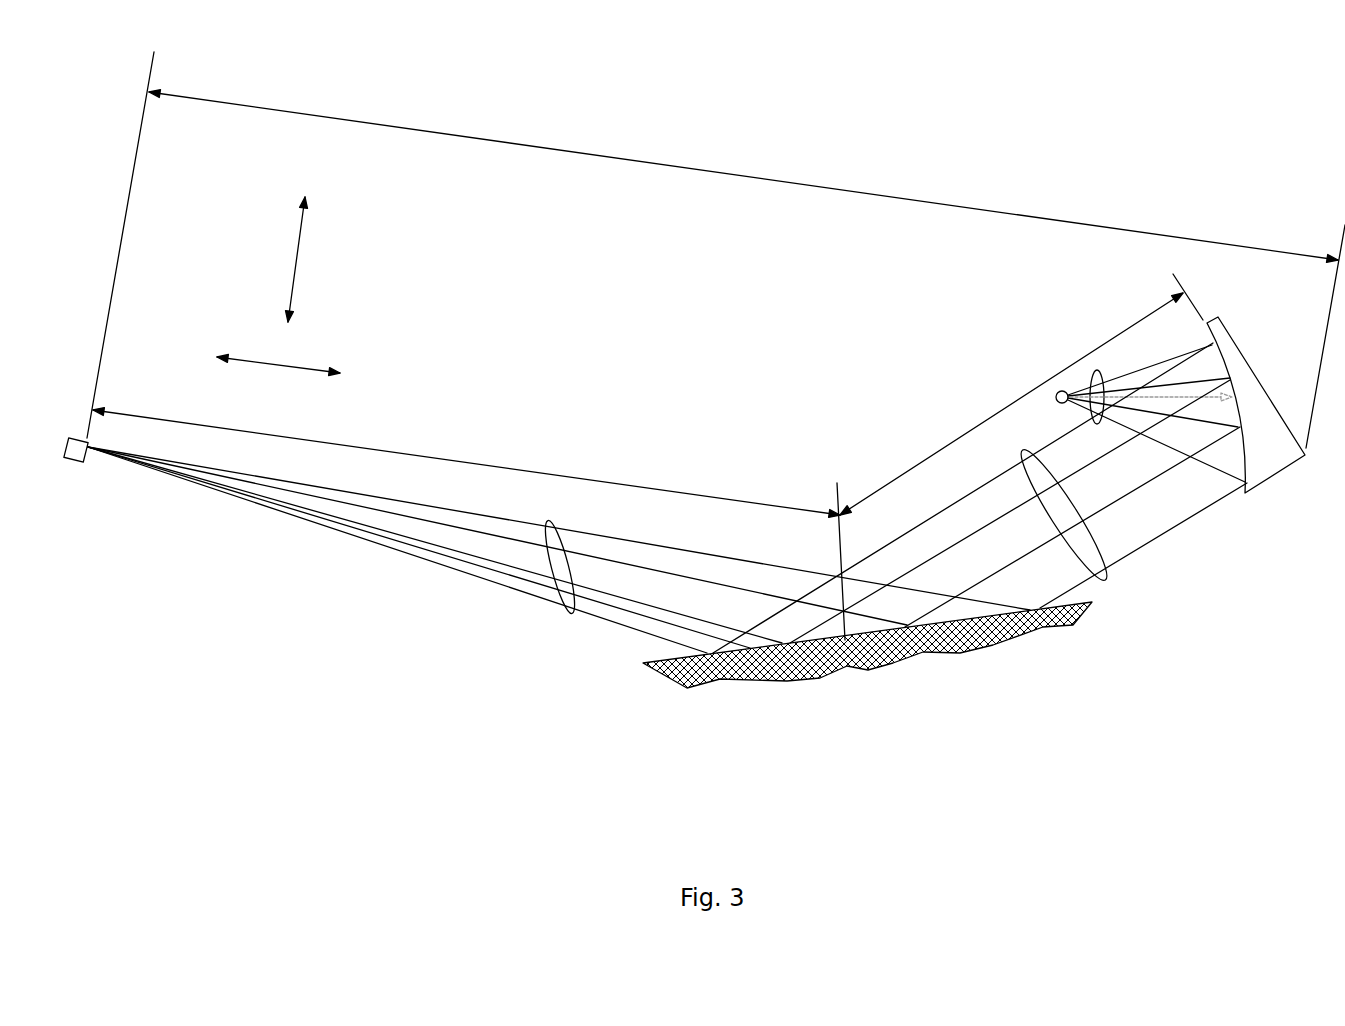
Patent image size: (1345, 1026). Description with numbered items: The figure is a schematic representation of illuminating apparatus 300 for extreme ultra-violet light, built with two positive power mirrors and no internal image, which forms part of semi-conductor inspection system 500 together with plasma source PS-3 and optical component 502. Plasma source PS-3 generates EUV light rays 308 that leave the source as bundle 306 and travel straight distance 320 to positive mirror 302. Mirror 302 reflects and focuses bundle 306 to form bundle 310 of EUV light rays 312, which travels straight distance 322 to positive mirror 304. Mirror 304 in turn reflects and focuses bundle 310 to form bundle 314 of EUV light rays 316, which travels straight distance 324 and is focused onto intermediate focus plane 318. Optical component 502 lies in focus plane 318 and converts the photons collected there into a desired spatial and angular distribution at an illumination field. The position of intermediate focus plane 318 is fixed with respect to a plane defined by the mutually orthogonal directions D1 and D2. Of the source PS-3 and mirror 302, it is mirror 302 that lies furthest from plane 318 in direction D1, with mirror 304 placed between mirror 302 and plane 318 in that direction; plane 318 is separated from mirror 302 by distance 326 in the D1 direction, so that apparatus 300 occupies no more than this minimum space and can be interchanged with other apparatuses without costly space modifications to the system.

The semi-conductor inspection system 500 is at (893, 142).
The optical component 502 is at (80, 437).
The illuminating apparatus 300 is at (743, 434).
The positive mirror 302 is at (1270, 387).
The positive mirror 304 is at (950, 653).
The bundle of EUV light rays 306 is at (1090, 365).
The plasma source PS-3 is at (1060, 390).
The EUV light rays 308 is at (1177, 450).
The bundle of EUV light rays 310 is at (1103, 580).
The EUV light rays 312 is at (1120, 553).
The bundle of EUV light rays 314 is at (552, 613).
The EUV light rays 316 is at (278, 513).
The intermediate focus plane 318 is at (95, 474).
The straight distance 320 is at (1152, 402).
The straight distance 322 is at (968, 427).
The straight distance 324 is at (543, 472).
The distance 326 is at (640, 162).
The direction D1 is at (257, 358).
The direction D2 is at (299, 250).